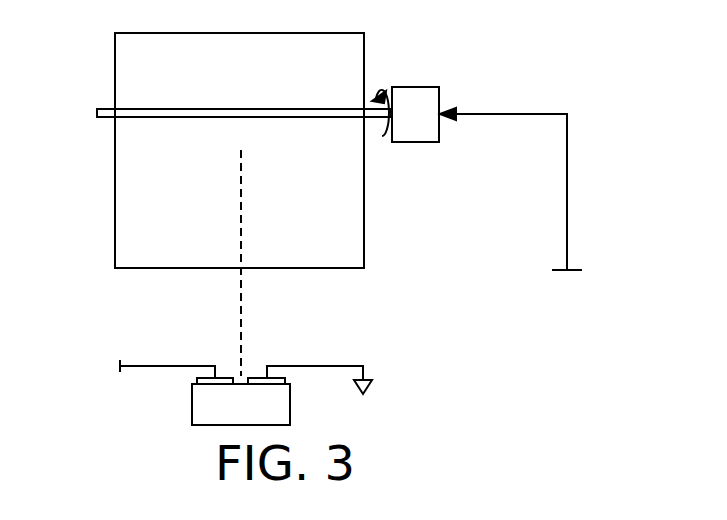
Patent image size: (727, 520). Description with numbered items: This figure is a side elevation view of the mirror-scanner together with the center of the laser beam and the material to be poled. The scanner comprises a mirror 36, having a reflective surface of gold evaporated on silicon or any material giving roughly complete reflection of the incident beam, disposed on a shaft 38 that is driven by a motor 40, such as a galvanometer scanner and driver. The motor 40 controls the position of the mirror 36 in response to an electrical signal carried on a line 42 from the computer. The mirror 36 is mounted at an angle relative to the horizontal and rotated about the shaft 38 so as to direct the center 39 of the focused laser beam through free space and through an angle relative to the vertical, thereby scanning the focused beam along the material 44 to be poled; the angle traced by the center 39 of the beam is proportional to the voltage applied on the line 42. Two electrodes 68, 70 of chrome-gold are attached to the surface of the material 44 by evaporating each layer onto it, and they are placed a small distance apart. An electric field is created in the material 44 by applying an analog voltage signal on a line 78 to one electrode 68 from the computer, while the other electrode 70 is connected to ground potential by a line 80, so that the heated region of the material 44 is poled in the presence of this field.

The mirror 36 is at (147, 180).
The shaft 38 is at (193, 110).
The center of the focused laser beam 39 is at (241, 315).
The motor 40 is at (430, 99).
The line 42 is at (567, 183).
The material to be poled 44 is at (197, 403).
The electrode 68 is at (203, 377).
The electrode 70 is at (283, 378).
The line 78 is at (171, 366).
The line 80 is at (308, 366).